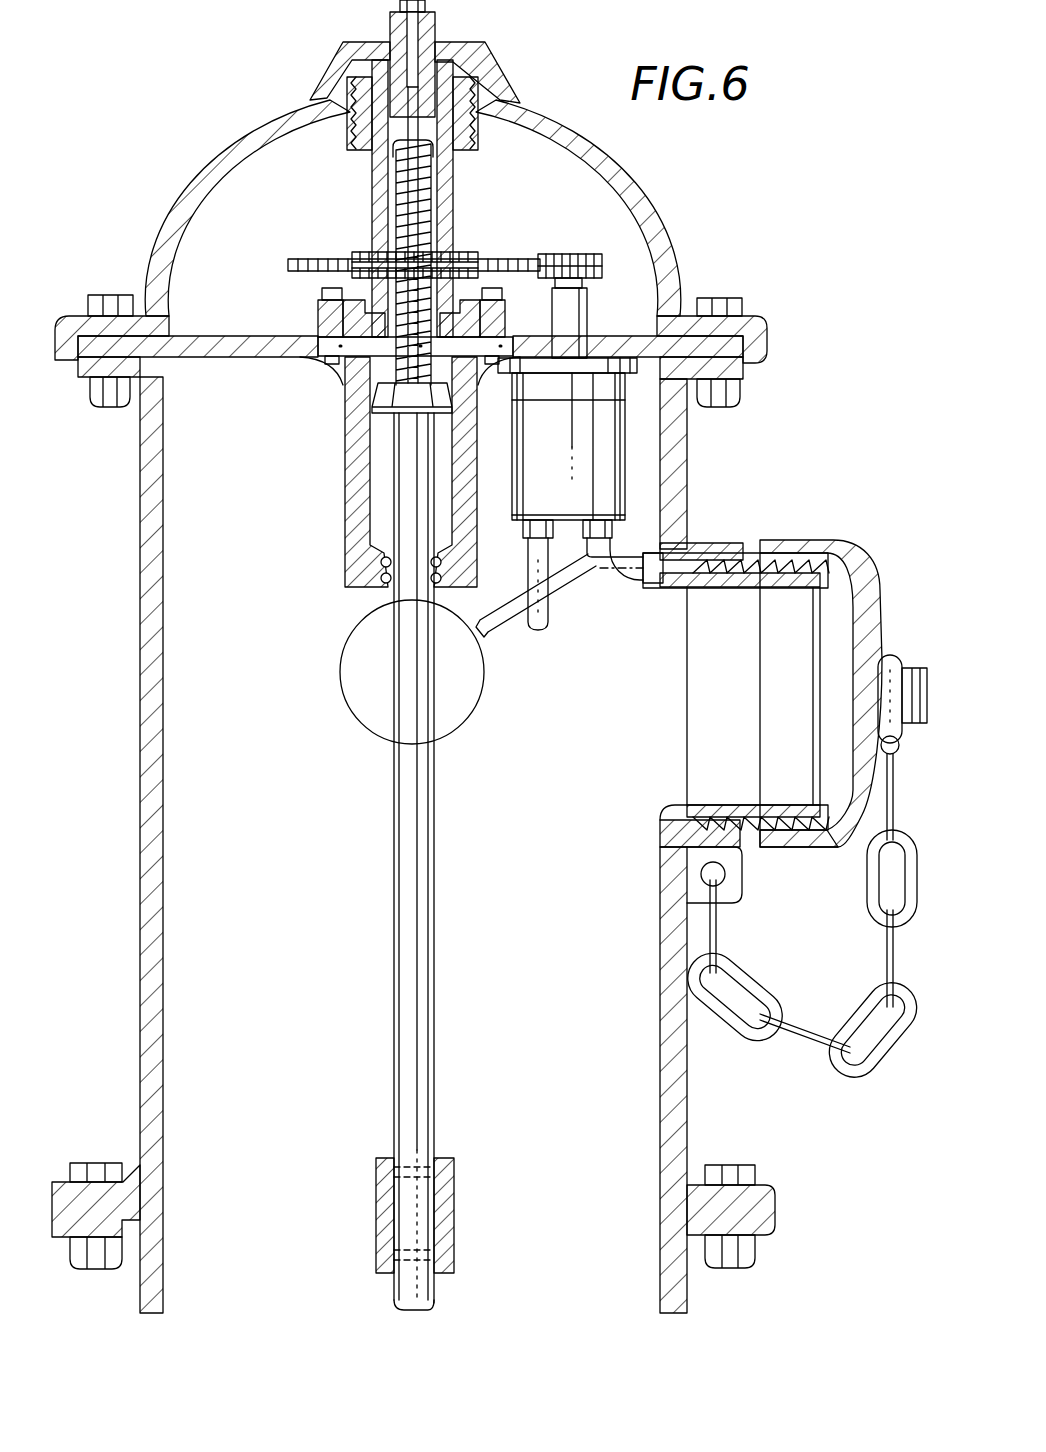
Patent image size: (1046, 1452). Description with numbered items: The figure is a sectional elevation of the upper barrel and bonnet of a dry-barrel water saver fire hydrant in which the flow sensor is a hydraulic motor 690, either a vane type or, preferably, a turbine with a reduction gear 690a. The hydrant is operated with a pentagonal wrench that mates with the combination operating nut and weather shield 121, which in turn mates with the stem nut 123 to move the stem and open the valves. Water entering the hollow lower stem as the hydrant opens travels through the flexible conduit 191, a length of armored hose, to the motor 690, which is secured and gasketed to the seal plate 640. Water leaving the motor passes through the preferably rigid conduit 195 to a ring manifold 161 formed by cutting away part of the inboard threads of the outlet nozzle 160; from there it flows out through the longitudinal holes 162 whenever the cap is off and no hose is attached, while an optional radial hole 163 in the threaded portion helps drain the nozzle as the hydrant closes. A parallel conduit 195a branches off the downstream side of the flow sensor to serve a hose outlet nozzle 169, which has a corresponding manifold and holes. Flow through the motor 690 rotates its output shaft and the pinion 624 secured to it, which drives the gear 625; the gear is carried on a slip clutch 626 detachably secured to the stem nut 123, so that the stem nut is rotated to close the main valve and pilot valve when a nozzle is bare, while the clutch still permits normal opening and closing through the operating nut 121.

The combination operating nut and weather shield 121 is at (500, 74).
The stem nut 123 is at (455, 206).
The slip clutch 626 is at (360, 250).
The gear 625 is at (518, 258).
The pinion 624 is at (593, 254).
The seal plate 640 is at (638, 346).
The reduction gear 690a is at (630, 386).
The hydraulic motor 690 is at (650, 496).
The conduit 195 is at (633, 552).
The ring manifold 161 is at (735, 546).
The conduit 195a is at (590, 578).
The flexible conduit 191 is at (549, 618).
The hose outlet nozzle 169 is at (346, 711).
The outlet nozzle 160 is at (687, 704).
The longitudinal holes 162 is at (750, 804).
The radial hole 163 is at (793, 842).